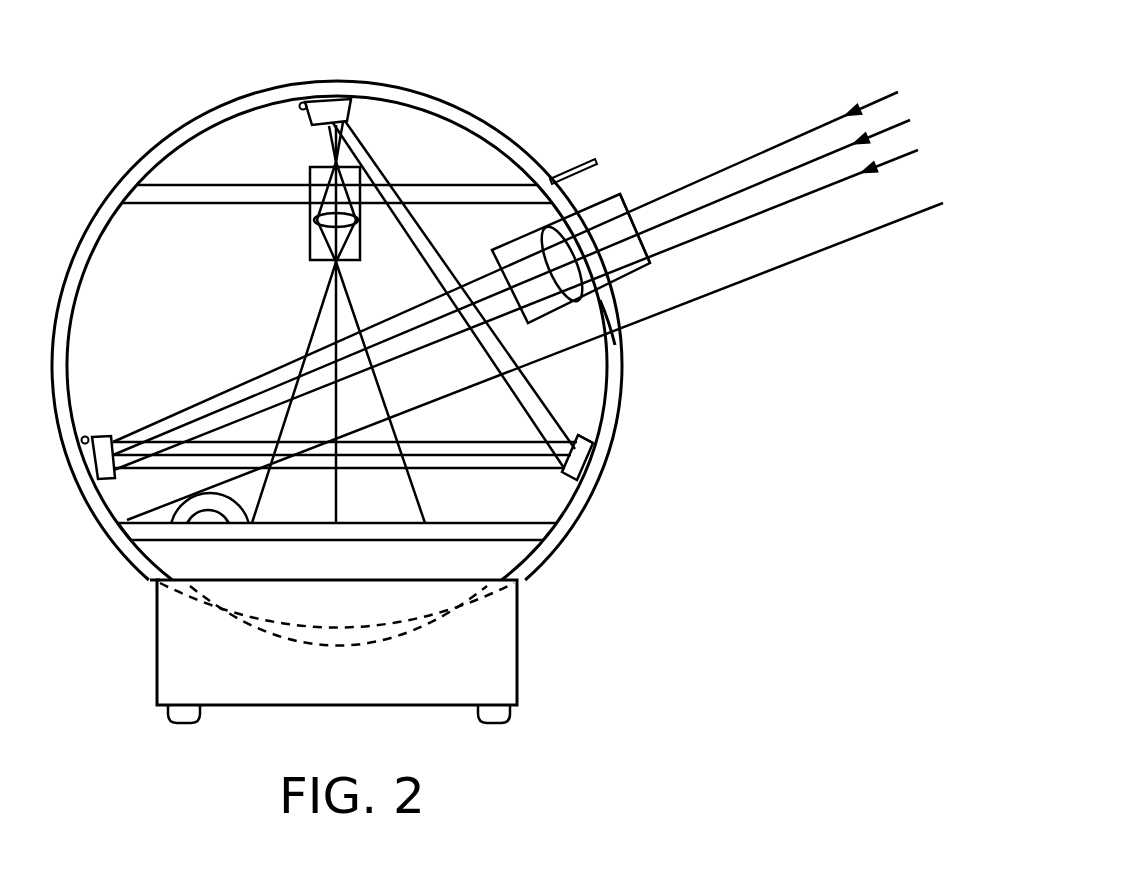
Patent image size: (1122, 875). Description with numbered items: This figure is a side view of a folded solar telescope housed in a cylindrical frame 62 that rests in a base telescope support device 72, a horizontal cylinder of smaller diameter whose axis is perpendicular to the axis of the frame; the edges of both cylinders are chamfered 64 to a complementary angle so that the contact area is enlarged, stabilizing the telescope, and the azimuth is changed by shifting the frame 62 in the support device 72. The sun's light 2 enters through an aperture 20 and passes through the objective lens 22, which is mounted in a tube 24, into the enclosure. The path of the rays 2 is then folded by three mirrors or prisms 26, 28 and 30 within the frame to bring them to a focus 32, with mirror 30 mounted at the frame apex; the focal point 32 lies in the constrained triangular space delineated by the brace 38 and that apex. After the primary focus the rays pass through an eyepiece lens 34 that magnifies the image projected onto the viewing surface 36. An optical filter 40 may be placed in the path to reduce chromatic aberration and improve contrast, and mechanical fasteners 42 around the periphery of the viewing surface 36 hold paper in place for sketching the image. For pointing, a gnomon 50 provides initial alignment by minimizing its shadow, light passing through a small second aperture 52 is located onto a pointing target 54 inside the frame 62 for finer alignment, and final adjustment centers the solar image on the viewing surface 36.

The sun's light 2 is at (908, 118).
The aperture 20 is at (578, 205).
The objective lens 22 is at (547, 237).
The tube 24 is at (653, 273).
The mirror or prism 26 is at (106, 435).
The mirror or prism 28 is at (570, 460).
The mirror 30 is at (330, 94).
The focus 32 is at (330, 157).
The eyepiece lens 34 is at (328, 221).
The viewing surface 36 is at (343, 522).
The brace 38 is at (207, 204).
The optical filter 40 is at (578, 447).
The mechanical fastener 42 is at (168, 526).
The gnomon 50 is at (592, 158).
The second aperture 52 is at (623, 332).
The pointing target 54 is at (127, 513).
The cylindrical frame 62 is at (158, 143).
The chamfered edges 64 is at (156, 583).
The base telescope support device 72 is at (512, 592).